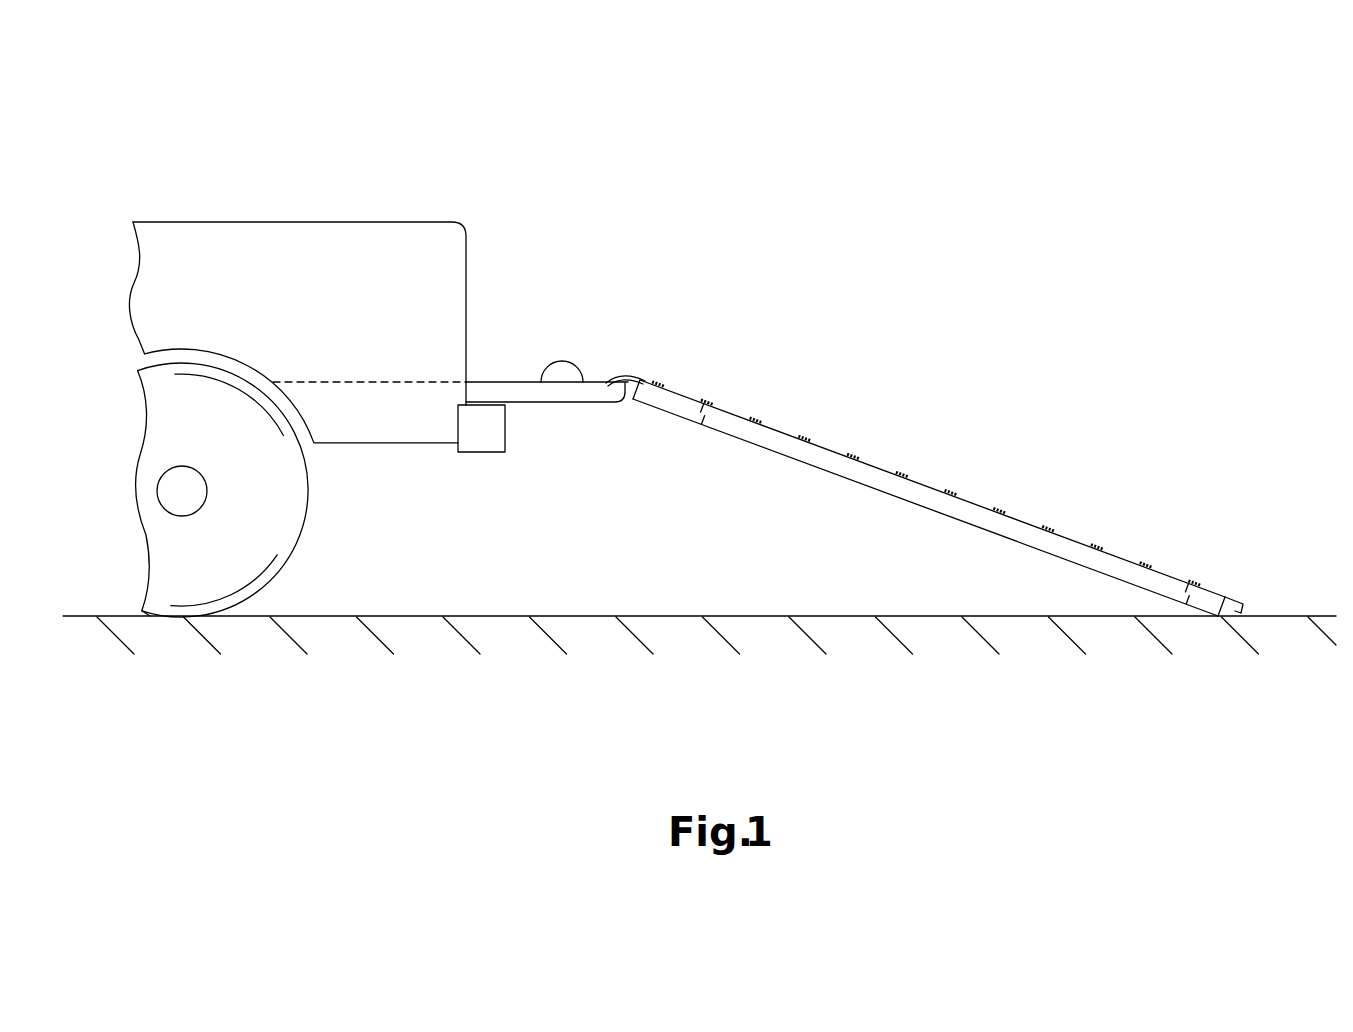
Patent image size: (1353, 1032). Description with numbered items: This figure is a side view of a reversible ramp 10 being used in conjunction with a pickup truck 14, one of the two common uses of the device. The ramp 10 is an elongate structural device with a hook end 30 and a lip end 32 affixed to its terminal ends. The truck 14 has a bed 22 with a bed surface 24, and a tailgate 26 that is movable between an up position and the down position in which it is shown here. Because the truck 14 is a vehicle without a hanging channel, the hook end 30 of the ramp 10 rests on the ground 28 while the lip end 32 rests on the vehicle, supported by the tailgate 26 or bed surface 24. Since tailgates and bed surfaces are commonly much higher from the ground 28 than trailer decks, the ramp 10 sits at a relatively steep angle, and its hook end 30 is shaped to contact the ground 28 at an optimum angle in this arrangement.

The reversible ramp 10 is at (988, 410).
The truck 14 is at (302, 218).
The bed 22 is at (466, 272).
The bed surface 24 is at (400, 382).
The tailgate 26 is at (584, 402).
The ground 28 is at (748, 616).
The hook end 30 is at (1240, 590).
The lip end 32 is at (640, 370).